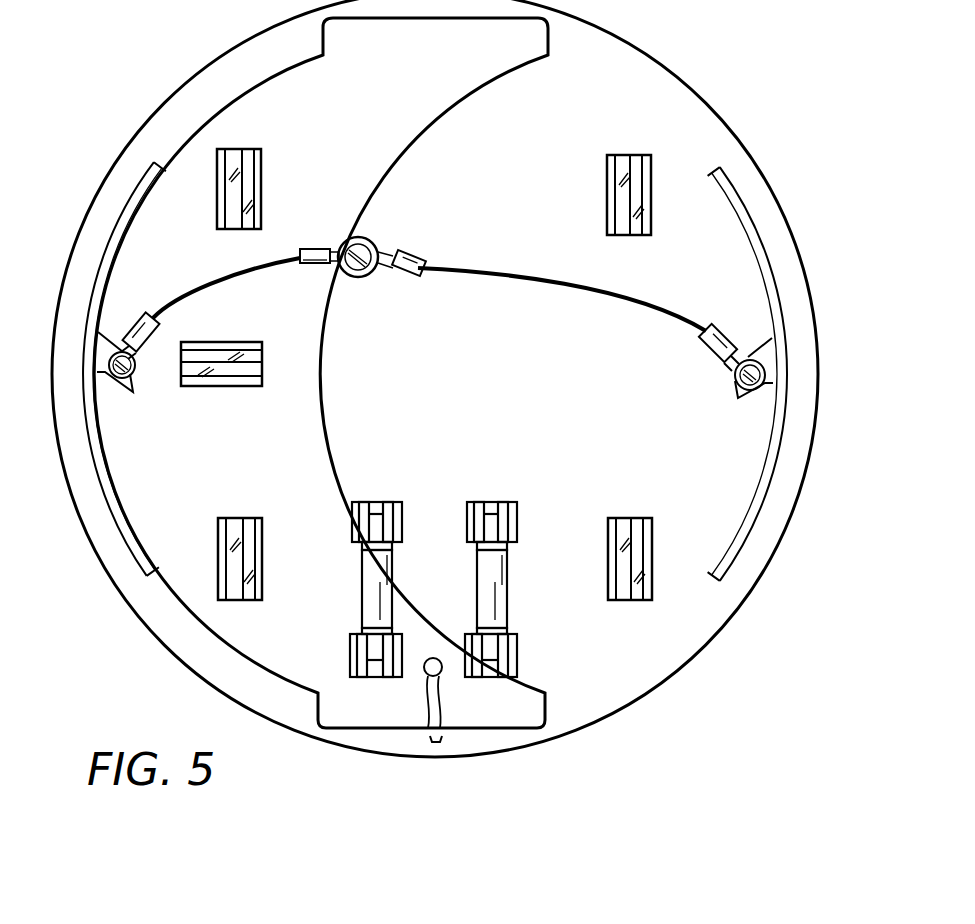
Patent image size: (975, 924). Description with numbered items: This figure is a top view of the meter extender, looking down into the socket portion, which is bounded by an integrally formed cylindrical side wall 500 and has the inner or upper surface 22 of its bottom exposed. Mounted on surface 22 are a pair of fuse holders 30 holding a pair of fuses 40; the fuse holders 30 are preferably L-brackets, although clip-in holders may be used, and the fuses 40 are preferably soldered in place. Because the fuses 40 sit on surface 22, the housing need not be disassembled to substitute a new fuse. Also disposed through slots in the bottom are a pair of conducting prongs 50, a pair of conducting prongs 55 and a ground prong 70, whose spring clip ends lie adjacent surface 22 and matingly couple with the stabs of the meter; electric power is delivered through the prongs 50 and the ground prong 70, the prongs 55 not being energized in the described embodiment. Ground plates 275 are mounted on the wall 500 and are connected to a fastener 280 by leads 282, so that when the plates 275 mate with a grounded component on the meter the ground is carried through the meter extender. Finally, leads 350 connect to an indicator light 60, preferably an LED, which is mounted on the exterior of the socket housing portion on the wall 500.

The cylindrical side wall 500 is at (603, 88).
The inner surface 22 is at (552, 393).
The ground plates 275 is at (105, 234).
The leads 282 is at (286, 254).
The fastener 280 is at (365, 276).
The conducting prongs 55 is at (262, 172).
The ground prong 70 is at (200, 388).
The conducting prongs 50 is at (258, 533).
The fuse holders 30 is at (467, 512).
The fuses 40 is at (362, 580).
The indicator light 60 is at (437, 738).
The leads 350 is at (437, 697).